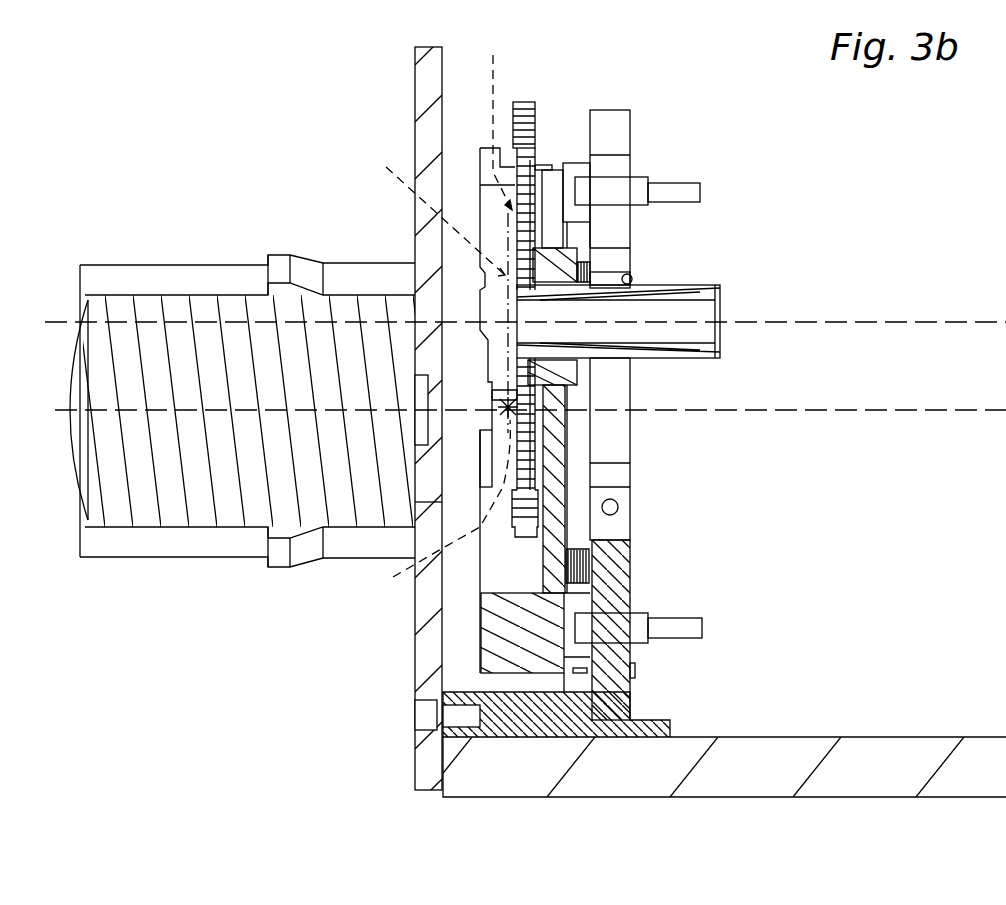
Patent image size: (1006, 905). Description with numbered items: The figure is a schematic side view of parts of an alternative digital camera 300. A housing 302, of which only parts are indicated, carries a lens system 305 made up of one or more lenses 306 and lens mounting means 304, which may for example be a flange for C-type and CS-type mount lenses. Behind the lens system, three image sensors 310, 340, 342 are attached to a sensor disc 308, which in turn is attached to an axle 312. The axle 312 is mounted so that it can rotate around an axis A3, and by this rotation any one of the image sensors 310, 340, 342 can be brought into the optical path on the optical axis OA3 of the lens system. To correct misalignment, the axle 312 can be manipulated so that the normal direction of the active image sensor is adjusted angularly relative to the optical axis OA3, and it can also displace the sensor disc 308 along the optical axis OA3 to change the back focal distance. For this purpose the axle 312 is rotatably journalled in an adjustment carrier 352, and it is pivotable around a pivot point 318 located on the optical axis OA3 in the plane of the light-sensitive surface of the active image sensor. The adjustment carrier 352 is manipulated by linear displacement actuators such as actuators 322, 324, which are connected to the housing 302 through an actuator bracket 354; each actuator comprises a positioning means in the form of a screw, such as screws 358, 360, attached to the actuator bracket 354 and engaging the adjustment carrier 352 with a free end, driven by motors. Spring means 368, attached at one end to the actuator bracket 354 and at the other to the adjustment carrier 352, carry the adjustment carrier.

The digital camera 300 is at (303, 90).
The lens system 305 is at (258, 232).
The lens 306 is at (132, 290).
The lens mounting means 304 is at (433, 318).
The image sensor 340 is at (412, 205).
The image sensor 342 is at (491, 225).
The sensor disc 308 is at (536, 152).
The positioning means (screw) 360 is at (577, 173).
The actuator 324 is at (812, 139).
The spring means 368 is at (590, 270).
The axle 312 is at (700, 286).
The axis A3 is at (940, 318).
The optical axis OA3 is at (935, 413).
The pivot point 318 is at (512, 406).
The image sensor 310 is at (420, 518).
The actuator 322 is at (812, 613).
The housing 302 is at (848, 760).
The adjustment carrier 352 is at (525, 647).
The actuator bracket 354 is at (613, 692).
The positioning means (screw) 358 is at (662, 633).